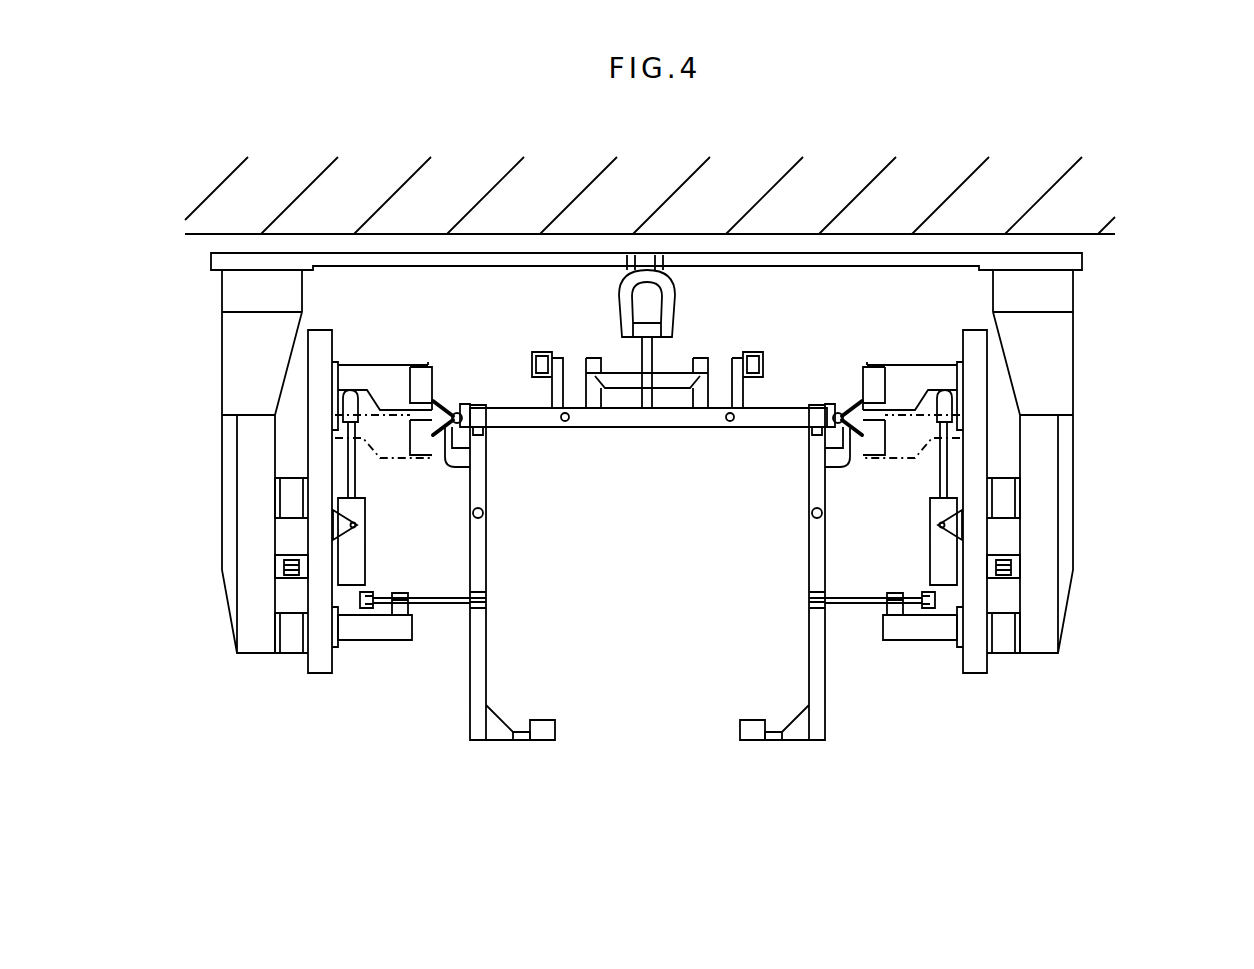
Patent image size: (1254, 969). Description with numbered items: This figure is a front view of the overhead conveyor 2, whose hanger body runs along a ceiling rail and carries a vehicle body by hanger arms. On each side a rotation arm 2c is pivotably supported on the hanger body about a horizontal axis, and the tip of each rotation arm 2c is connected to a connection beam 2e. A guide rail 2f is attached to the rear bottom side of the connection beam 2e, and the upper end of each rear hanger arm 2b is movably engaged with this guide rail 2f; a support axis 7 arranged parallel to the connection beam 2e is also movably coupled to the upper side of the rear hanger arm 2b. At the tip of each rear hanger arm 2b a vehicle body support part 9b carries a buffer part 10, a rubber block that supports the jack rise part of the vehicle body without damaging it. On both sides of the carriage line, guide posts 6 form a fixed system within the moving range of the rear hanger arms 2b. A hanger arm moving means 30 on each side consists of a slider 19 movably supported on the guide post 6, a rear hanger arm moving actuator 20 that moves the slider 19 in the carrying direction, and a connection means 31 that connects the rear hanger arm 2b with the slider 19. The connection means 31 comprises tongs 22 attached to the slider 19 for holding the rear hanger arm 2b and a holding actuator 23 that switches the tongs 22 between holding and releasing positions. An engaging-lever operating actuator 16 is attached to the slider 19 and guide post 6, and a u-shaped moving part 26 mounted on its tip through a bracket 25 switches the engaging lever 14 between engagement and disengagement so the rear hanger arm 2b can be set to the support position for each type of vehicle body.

The overhead conveyor 2 is at (676, 373).
The rear hanger arm 2b is at (478, 688).
The rotation arm 2c is at (512, 412).
The connection beam 2e is at (462, 403).
The guide rail 2f is at (484, 434).
The guide post 6 is at (232, 378).
The support axis 7 is at (487, 512).
The vehicle body support part 9b is at (519, 747).
The buffer part 10 is at (543, 720).
The engaging lever 14 is at (440, 442).
The engaging-lever operating actuator 16 is at (365, 540).
The slider 19 is at (318, 545).
The rear hanger arm moving actuator 20 is at (278, 574).
The tongs 22 is at (412, 622).
The holding actuator 23 is at (365, 600).
The bracket 25 is at (370, 378).
The moving part 26 is at (420, 365).
The hanger arm moving means 30 is at (120, 530).
The connection means 31 is at (178, 585).